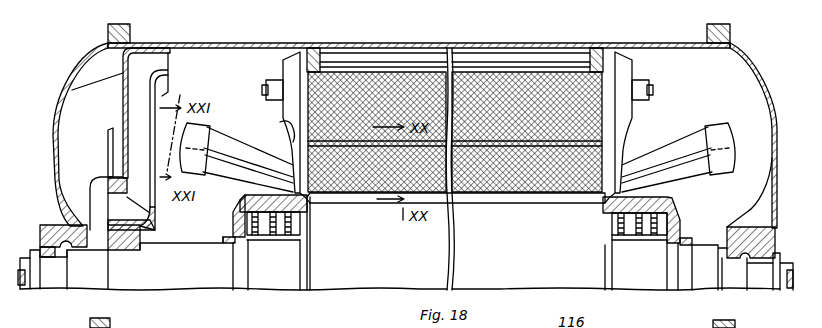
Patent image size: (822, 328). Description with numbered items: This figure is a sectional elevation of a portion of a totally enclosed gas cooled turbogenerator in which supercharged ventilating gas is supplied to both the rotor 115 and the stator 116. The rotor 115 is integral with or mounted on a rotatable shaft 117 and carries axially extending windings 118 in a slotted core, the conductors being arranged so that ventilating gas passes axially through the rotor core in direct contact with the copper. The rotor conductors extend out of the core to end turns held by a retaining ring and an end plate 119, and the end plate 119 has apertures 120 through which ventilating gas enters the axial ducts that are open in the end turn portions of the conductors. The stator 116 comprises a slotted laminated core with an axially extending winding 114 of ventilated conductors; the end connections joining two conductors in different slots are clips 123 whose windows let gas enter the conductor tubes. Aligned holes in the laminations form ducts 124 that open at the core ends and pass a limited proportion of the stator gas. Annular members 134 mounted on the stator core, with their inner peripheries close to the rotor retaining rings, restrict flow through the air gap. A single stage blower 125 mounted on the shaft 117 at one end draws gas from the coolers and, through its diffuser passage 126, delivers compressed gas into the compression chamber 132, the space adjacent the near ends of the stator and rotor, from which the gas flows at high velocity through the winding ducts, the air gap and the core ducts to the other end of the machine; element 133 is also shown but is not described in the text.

The axially extending winding 114 is at (653, 147).
The rotor 115 is at (544, 266).
The stator 116 is at (543, 72).
The rotatable shaft 117 is at (185, 282).
The axially extending windings 118 is at (272, 235).
The end plate 119 is at (677, 217).
The apertures 120 is at (243, 232).
The clip 123 is at (207, 129).
The ducts 124 is at (293, 142).
The single stage blower 125 is at (190, 224).
The diffuser passage 126 is at (157, 95).
The compression chamber 132 is at (266, 53).
The right flange 133 is at (677, 236).
The annular members 134 is at (308, 197).